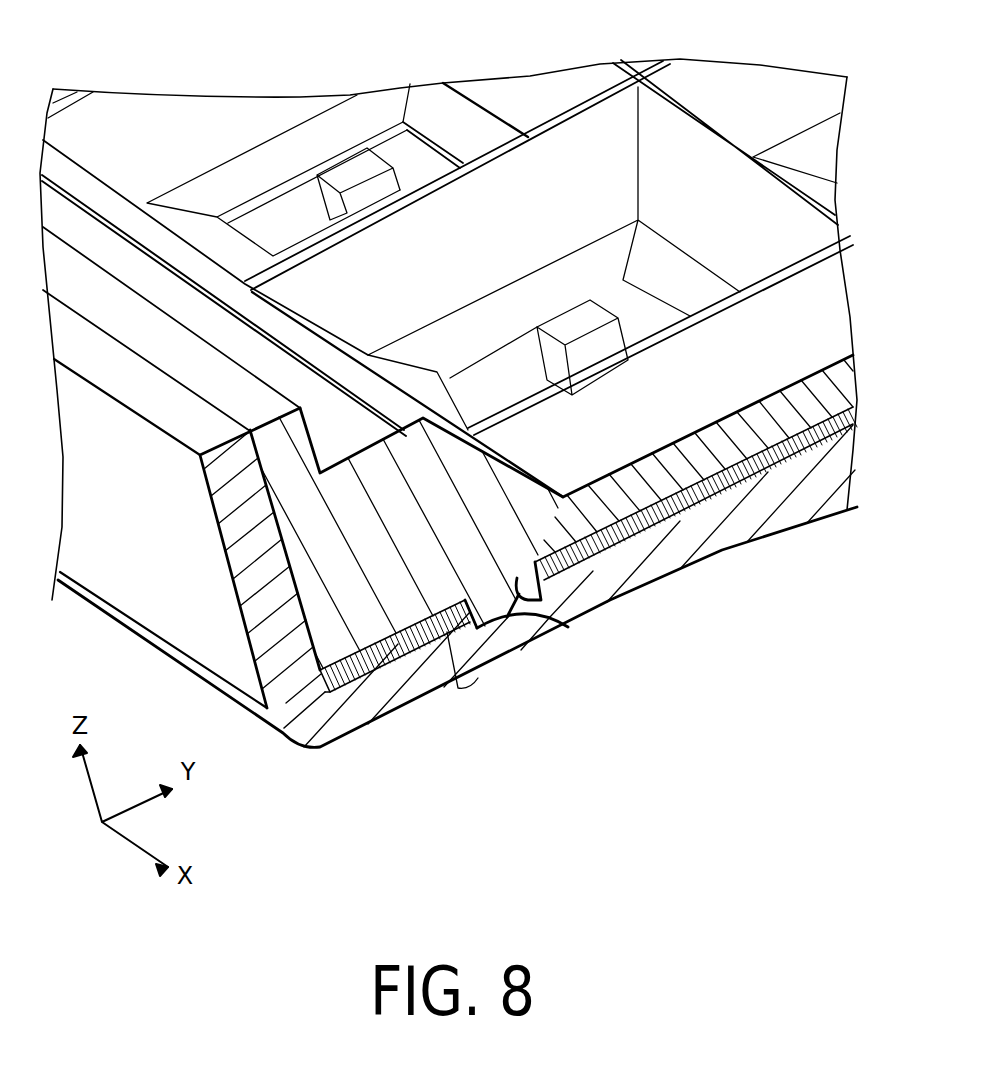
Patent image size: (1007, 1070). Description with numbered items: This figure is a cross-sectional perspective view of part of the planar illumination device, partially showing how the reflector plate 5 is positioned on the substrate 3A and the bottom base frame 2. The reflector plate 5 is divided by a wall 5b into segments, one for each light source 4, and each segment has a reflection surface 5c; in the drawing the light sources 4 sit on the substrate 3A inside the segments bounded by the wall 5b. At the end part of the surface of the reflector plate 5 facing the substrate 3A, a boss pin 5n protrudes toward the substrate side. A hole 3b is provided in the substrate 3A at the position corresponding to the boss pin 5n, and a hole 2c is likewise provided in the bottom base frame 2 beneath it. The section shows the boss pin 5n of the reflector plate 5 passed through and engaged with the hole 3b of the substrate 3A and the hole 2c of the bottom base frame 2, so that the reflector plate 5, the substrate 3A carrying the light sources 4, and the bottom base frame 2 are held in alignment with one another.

The bottom base frame 2 is at (682, 553).
The hole 2c is at (467, 663).
The substrate 3A is at (632, 537).
The hole 3b is at (542, 618).
The light source 4 is at (562, 282).
The reflector plate 5 is at (383, 597).
The wall 5b is at (612, 250).
The reflection surface 5c is at (555, 173).
The boss pin 5n is at (502, 597).